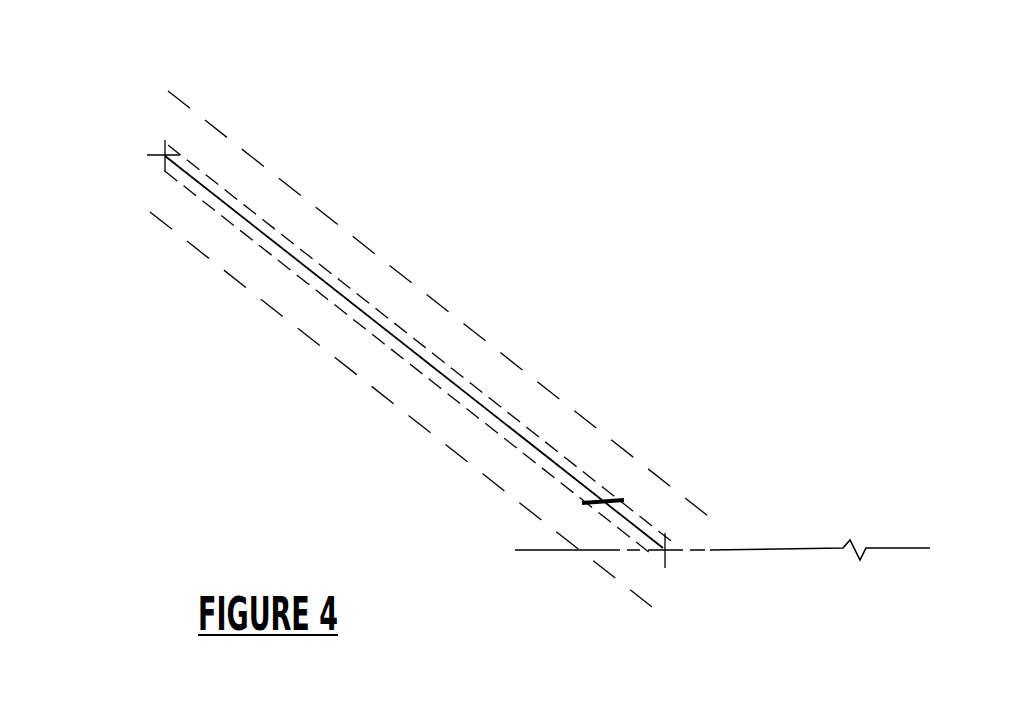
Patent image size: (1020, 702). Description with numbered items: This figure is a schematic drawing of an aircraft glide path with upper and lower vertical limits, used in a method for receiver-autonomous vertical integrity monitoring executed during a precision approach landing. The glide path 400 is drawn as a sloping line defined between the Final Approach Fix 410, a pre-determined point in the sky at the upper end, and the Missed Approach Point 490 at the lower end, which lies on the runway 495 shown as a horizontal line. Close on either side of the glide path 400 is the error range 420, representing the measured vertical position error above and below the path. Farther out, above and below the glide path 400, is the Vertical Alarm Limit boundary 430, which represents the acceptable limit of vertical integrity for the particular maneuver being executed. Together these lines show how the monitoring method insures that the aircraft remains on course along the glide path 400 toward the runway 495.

The glide path 400 is at (489, 402).
The Final Approach Fix 410 is at (150, 162).
The error range 420 is at (238, 260).
The Vertical Alarm Limit boundary 430 is at (426, 535).
The Missed Approach Point 490 is at (625, 491).
The runway 495 is at (787, 540).